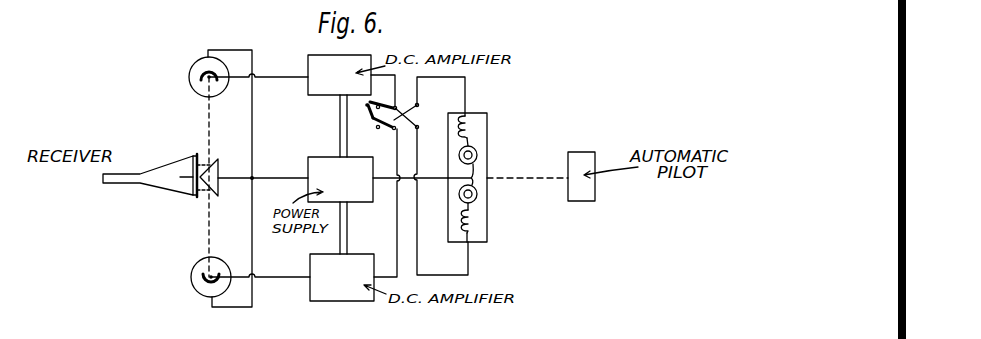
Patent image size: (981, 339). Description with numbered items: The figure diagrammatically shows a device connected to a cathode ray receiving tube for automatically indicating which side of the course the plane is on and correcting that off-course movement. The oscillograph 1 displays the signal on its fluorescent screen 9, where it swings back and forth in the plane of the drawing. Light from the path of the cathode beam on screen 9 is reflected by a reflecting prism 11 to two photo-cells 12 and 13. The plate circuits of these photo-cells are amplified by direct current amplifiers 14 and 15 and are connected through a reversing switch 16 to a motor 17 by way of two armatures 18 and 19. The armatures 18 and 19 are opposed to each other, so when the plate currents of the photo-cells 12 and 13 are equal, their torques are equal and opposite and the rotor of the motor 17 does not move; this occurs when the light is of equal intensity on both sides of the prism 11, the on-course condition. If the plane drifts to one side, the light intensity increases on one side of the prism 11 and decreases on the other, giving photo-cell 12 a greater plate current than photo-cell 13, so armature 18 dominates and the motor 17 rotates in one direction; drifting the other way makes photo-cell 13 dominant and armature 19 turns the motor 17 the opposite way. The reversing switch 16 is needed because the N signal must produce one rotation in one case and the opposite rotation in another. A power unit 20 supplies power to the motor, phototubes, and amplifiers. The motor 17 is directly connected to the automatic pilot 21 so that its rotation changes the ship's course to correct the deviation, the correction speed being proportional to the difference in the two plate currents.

The oscillograph 1 is at (163, 158).
The fluorescent screen 9 is at (179, 179).
The reflecting prism 11 is at (218, 161).
The photo-cell 12 is at (190, 66).
The photo-cell 13 is at (190, 277).
The direct current amplifier 14 is at (356, 57).
The direct current amplifier 15 is at (346, 297).
The reversing switch 16 is at (419, 112).
The motor 17 is at (487, 114).
The armature 18 is at (474, 136).
The armature 19 is at (474, 220).
The power unit 20 is at (340, 179).
The automatic pilot 21 is at (583, 194).